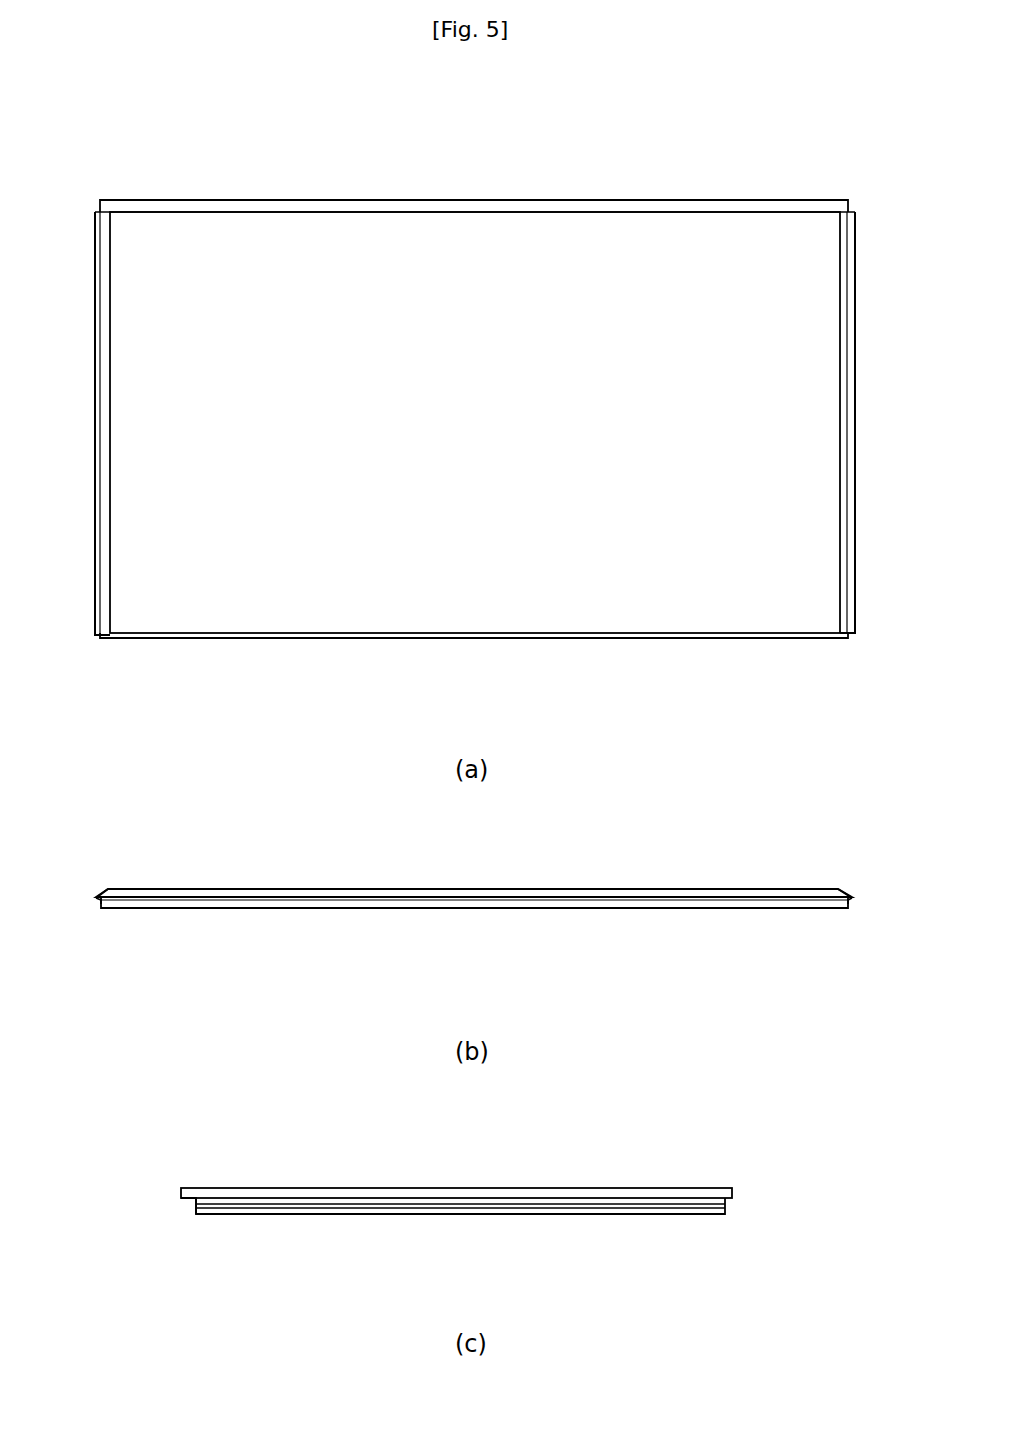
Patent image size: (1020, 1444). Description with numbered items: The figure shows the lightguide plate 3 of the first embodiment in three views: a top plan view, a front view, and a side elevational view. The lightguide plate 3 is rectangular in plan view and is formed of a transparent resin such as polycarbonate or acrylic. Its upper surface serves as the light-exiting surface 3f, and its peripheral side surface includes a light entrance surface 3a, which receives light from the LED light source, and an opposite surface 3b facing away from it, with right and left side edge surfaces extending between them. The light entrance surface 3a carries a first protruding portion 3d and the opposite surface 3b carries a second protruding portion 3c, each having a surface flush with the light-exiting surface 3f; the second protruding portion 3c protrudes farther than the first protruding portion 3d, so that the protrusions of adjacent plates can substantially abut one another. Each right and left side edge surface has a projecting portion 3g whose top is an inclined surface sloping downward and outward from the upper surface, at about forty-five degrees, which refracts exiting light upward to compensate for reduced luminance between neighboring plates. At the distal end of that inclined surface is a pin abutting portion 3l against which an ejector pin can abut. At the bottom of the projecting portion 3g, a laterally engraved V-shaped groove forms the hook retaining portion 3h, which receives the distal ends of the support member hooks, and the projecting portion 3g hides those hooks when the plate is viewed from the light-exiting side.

The lightguide plate 3 is at (728, 172).
The light entrance surface 3a is at (617, 901).
The opposite surface 3b is at (196, 1206).
The second protruding portion 3c is at (495, 200).
The first protruding portion 3d is at (763, 640).
The light-exiting surface 3f is at (662, 583).
The projecting portion 3g is at (97, 568).
The hook retaining portion 3h is at (101, 909).
The pin abutting portion 3l is at (95, 278).